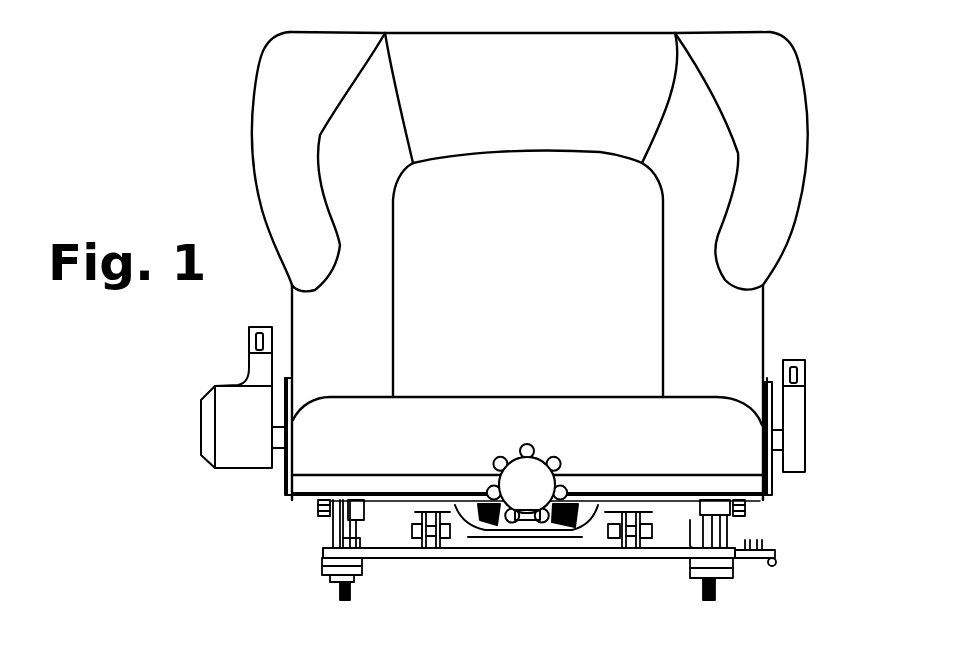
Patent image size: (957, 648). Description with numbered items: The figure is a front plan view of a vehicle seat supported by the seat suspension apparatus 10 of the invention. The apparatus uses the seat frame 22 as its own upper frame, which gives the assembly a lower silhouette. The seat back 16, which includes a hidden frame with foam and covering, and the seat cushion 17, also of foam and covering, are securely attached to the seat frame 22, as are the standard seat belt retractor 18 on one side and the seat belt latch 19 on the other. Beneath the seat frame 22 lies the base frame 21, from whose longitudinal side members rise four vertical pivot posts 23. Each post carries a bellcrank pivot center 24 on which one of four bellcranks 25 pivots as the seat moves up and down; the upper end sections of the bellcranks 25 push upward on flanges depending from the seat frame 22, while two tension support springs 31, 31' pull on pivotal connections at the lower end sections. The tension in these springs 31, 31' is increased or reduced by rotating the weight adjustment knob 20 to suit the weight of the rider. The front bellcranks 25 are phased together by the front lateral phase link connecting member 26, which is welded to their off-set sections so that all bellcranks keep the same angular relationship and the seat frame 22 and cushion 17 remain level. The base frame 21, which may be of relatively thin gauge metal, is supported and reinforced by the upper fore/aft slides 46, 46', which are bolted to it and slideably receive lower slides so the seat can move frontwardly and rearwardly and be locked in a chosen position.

The seat suspension apparatus 10 is at (320, 530).
The seat back 16 is at (244, 132).
The seat cushion 17 is at (652, 432).
The seat belt retractor 18 is at (232, 428).
The seat belt latch 19 is at (795, 427).
The weight adjustment knob 20 is at (527, 482).
The base frame 21 is at (553, 558).
The seat frame 22 is at (745, 487).
The vertical pivot post 23 is at (340, 540).
The bellcrank pivot center 24 is at (318, 506).
The bellcrank 25 is at (418, 518).
The front lateral phase link connecting member 26 is at (512, 537).
The tension support spring 31 is at (444, 565).
The tension support spring 31' is at (619, 564).
The upper fore/aft slide 46 is at (314, 560).
The upper fore/aft slide 46' is at (708, 581).